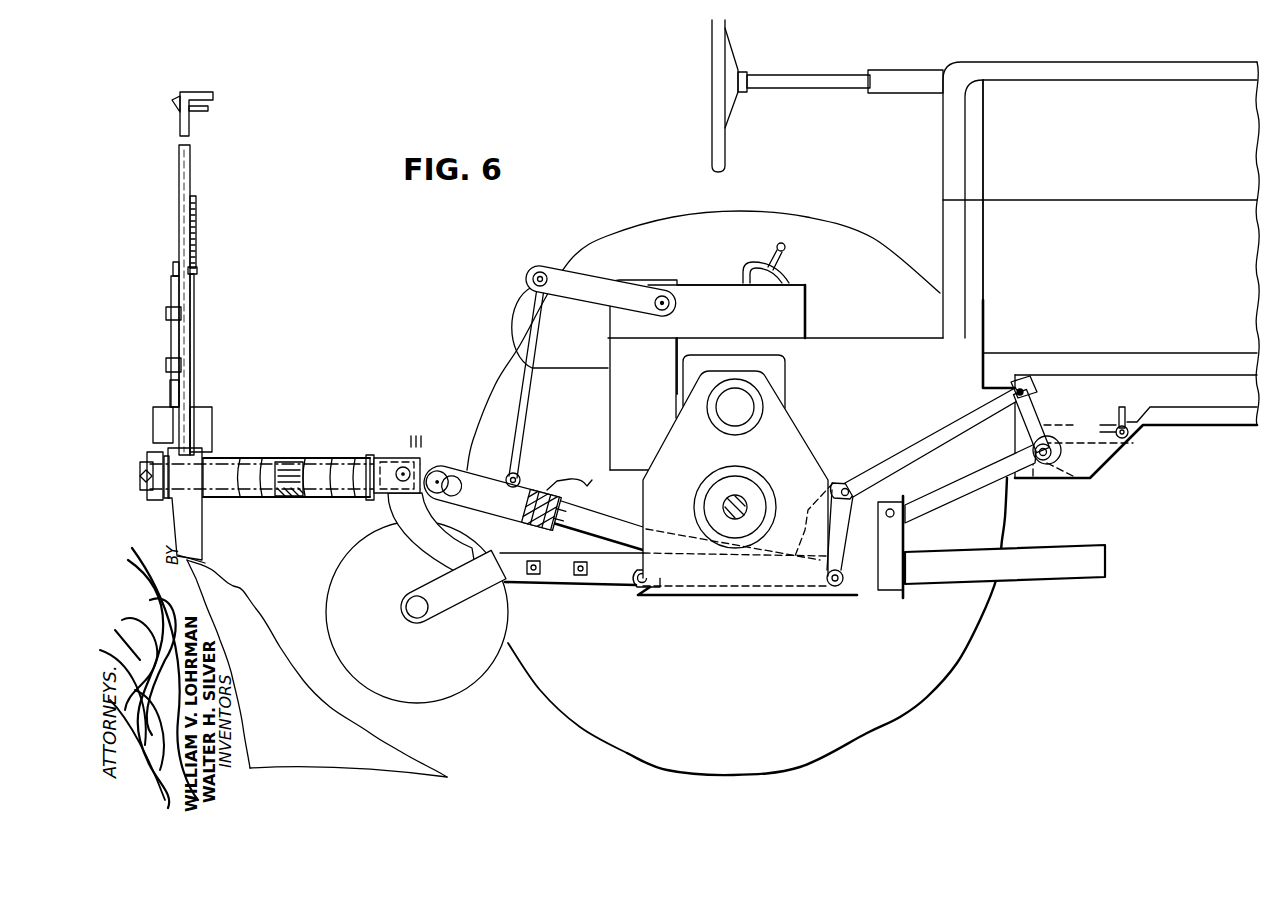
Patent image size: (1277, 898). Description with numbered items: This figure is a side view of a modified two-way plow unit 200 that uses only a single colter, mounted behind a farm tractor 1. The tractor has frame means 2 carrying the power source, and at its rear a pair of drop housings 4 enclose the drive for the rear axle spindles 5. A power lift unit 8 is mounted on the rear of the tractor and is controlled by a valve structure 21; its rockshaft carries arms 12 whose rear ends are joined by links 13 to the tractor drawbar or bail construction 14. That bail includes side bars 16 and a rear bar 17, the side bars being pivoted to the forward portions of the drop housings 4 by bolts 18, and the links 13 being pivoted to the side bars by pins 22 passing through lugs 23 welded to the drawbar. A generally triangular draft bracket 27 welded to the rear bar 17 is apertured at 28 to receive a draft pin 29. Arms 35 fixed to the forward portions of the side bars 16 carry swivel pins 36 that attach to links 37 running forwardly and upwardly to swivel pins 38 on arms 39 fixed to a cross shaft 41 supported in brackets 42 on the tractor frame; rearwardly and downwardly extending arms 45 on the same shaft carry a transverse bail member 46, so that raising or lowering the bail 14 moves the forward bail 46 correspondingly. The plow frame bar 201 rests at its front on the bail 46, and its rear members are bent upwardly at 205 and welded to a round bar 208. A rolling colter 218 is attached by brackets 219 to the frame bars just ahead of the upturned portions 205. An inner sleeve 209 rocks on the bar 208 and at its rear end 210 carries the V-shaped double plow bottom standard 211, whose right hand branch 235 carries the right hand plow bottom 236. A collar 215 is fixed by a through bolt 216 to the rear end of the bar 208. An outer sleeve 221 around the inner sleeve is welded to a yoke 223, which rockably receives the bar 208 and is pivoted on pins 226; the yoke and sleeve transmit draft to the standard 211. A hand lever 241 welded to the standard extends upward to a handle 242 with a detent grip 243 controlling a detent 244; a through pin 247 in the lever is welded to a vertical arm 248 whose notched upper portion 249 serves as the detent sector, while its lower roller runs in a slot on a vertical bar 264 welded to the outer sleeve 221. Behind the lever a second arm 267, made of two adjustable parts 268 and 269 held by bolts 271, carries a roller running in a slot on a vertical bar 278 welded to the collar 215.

The farm tractor 1 is at (858, 333).
The frame means 2 is at (893, 350).
The drop housings 4 is at (801, 445).
The rear axle spindles 5 is at (737, 496).
The power lift unit 8 is at (699, 276).
The arms 12 is at (607, 292).
The links 13 is at (532, 343).
The tractor drawbar or bail construction 14 is at (603, 505).
The side bars 16 is at (618, 530).
The rear bar 17 is at (450, 478).
The bolts 18 is at (830, 587).
The valve structure 21 is at (760, 258).
The pins 22 is at (509, 474).
The lugs 23 is at (546, 482).
The draft bracket 27 is at (538, 494).
The aperture 28 is at (538, 528).
The draft pin 29 is at (586, 496).
The arms 35 is at (836, 482).
The swivel pins 36 is at (847, 488).
The links 37 is at (924, 447).
The swivel pins 38 is at (1020, 385).
The arms 39 is at (1034, 406).
The cross shaft 41 is at (1050, 444).
The brackets 42 is at (1097, 462).
The arms 45 is at (997, 486).
The transverse bail member 46 is at (888, 582).
The two-way plow unit 200 is at (265, 444).
The frame bar 201 is at (966, 588).
The rear upturned portions 205 is at (392, 540).
The longitudinally extending bar 208 is at (289, 460).
The inner sleeve member 209 is at (315, 484).
The rear end of inner sleeve 210 is at (165, 503).
The double plow bottom standard 211 is at (209, 524).
The collar 215 is at (150, 470).
The through bolt 216 is at (140, 479).
The rolling colter 218 is at (492, 661).
The brackets 219 is at (504, 601).
The outer sleeve 221 is at (338, 456).
The yoke 223 is at (381, 454).
The pivot pins 226 is at (397, 460).
The right hand branch 235 is at (208, 552).
The right hand plow bottom 236 is at (259, 628).
The hand lever 241 is at (172, 186).
The handle 242 is at (194, 92).
The detent grip 243 is at (197, 111).
The detent 244 is at (197, 198).
The through pin 247 is at (197, 271).
The vertically extending arm 248 is at (192, 318).
The upper portion of arm 249 is at (196, 227).
The vertical bar 264 is at (213, 418).
The second arm 267 is at (168, 339).
The upper arm part 268 is at (175, 292).
The lower arm part 269 is at (174, 385).
The bolts 271 is at (167, 313).
The vertical bar 278 is at (158, 450).